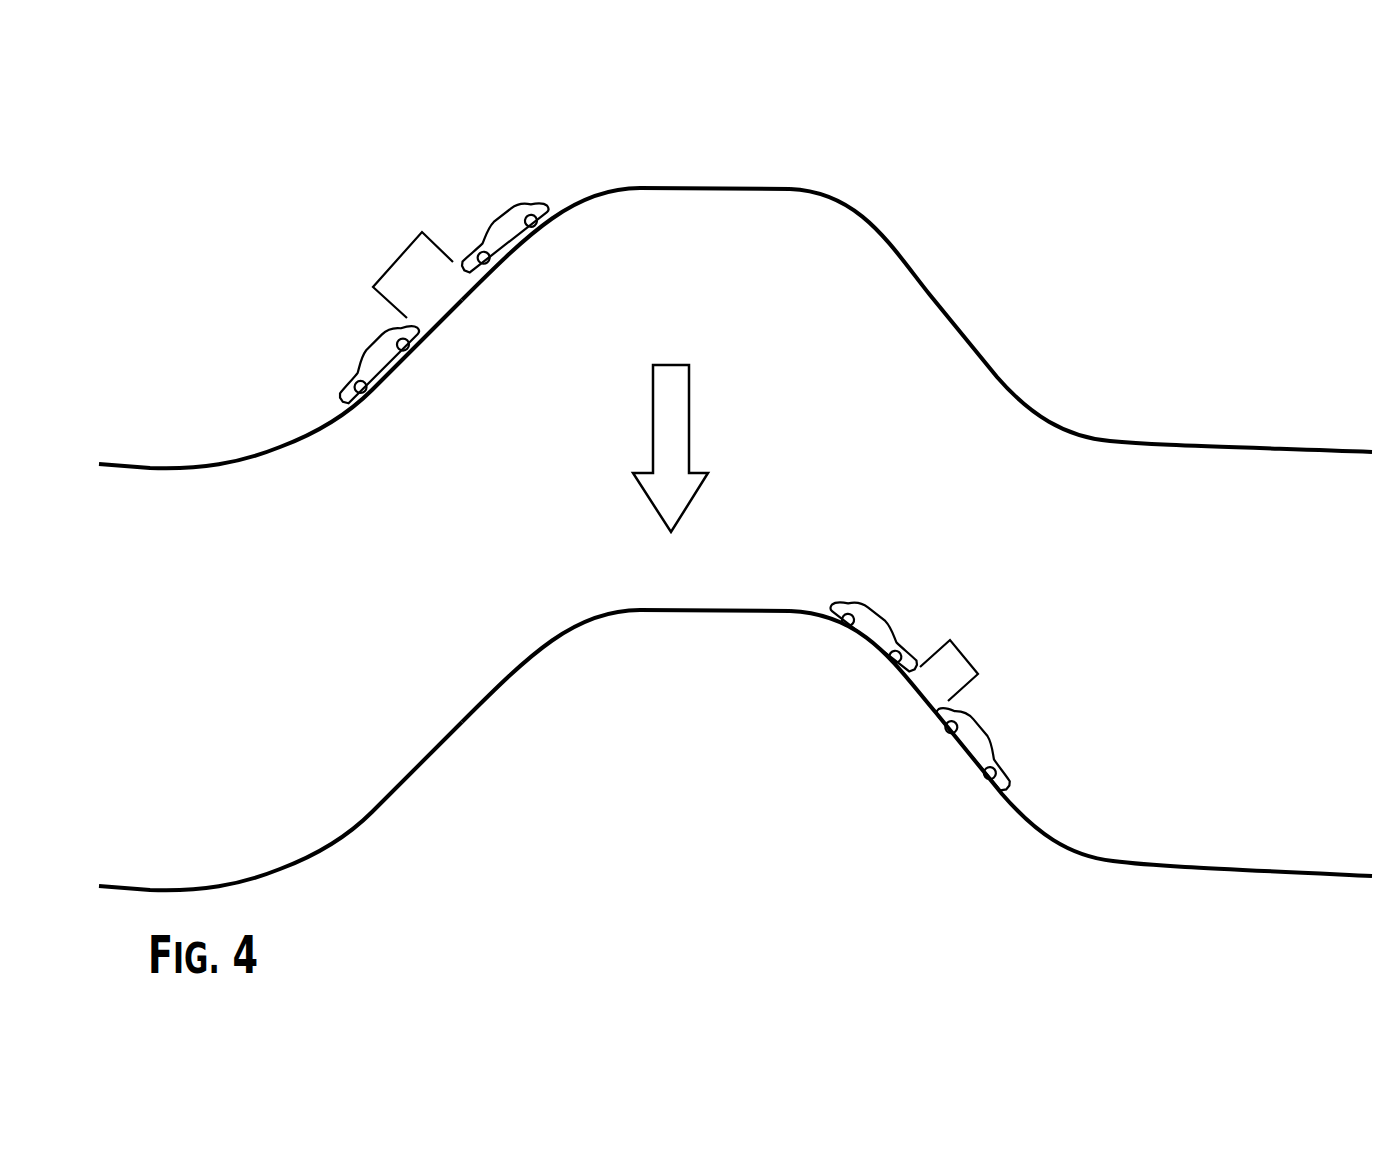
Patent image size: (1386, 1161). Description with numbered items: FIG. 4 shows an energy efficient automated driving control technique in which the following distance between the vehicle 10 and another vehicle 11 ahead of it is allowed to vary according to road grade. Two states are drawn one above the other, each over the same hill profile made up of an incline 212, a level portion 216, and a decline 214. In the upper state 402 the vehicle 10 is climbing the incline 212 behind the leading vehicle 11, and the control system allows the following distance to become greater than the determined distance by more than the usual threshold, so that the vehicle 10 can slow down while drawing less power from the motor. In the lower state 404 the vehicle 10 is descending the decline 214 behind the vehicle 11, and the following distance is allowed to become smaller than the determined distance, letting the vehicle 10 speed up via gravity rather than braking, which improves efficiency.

The vehicle 10 is at (385, 345).
The second vehicle 11 is at (487, 225).
The incline 212 is at (460, 307).
The decline 214 is at (910, 265).
The level portion 216 is at (707, 193).
The state 402 is at (1122, 106).
The state 404 is at (1122, 587).